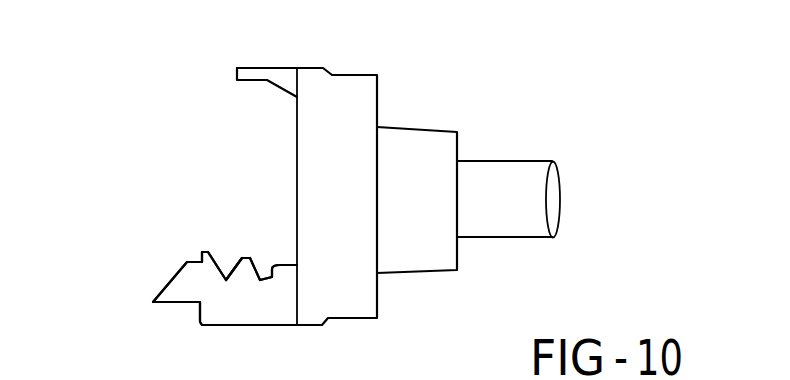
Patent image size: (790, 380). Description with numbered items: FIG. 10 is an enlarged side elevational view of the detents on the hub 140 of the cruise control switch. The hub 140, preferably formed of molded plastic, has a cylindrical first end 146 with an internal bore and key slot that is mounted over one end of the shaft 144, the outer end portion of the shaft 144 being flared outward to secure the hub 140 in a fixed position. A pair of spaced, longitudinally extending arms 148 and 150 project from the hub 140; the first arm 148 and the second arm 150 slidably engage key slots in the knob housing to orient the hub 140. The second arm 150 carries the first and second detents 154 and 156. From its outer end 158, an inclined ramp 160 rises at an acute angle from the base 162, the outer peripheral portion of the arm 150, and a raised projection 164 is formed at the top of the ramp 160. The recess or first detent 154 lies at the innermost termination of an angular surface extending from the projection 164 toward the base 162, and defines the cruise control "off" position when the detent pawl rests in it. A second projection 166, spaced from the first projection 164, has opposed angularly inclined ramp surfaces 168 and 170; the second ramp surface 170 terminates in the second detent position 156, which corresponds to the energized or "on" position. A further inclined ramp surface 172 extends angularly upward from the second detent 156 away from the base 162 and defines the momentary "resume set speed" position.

The hub 140 is at (395, 188).
The shaft 144 is at (530, 182).
The cylindrical first end 146 is at (438, 150).
The arm 148 is at (280, 75).
The second arm 150 is at (277, 310).
The first detent 154 is at (225, 278).
The second detent position 156 is at (258, 277).
The outer end 158 is at (153, 302).
The inclined ramp 160 is at (172, 277).
The base 162 is at (222, 327).
The raised projection 164 is at (201, 253).
The second projection 166 is at (248, 276).
The ramp surface 168 is at (241, 262).
The second ramp surface 170 is at (258, 277).
The inclined ramp surface 172 is at (297, 266).